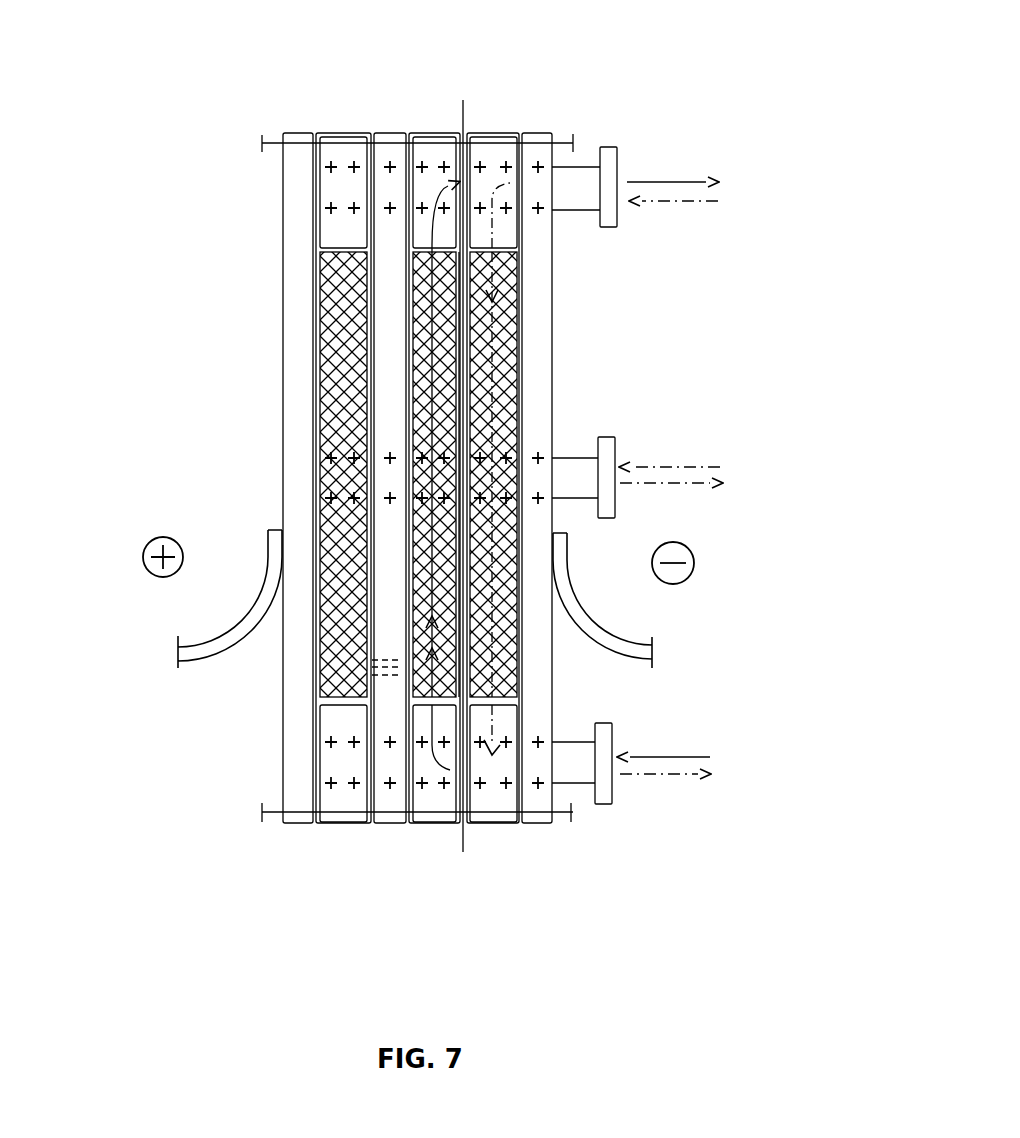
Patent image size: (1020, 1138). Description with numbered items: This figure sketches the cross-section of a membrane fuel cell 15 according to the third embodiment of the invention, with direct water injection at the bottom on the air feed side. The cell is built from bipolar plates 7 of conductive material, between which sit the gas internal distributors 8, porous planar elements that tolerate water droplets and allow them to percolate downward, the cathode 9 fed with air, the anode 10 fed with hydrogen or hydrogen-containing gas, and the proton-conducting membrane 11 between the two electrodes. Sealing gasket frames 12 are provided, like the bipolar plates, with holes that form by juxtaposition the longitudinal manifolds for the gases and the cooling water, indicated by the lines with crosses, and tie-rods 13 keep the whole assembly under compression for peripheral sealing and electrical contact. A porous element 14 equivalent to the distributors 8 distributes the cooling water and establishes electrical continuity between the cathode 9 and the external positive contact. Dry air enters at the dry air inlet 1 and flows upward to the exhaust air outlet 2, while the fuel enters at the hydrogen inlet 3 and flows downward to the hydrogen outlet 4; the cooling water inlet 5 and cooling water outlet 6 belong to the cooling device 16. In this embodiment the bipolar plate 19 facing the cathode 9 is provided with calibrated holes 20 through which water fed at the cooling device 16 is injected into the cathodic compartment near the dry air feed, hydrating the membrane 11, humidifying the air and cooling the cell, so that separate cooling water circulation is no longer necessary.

The dry air inlet 1 is at (631, 759).
The exhaust air outlet 2 is at (629, 182).
The hydrogen inlet 3 is at (680, 228).
The hydrogen outlet 4 is at (664, 803).
The cooling water inlet 5 is at (675, 505).
The cooling water outlet 6 is at (642, 470).
The bipolar plates 7 is at (290, 135).
The gas internal distributors 8 is at (520, 350).
The cathode 9 is at (453, 332).
The anode 10 is at (462, 432).
The proton-conducting membrane 11 is at (460, 837).
The sealing gasket frames 12 is at (340, 135).
The tie-rods 13 is at (262, 145).
The porous element 14 is at (333, 383).
The fuel cell 15 is at (337, 837).
The cooling device 16 is at (442, 838).
The bipolar plate facing the cathode 19 is at (388, 477).
The calibrated holes 20 is at (383, 672).